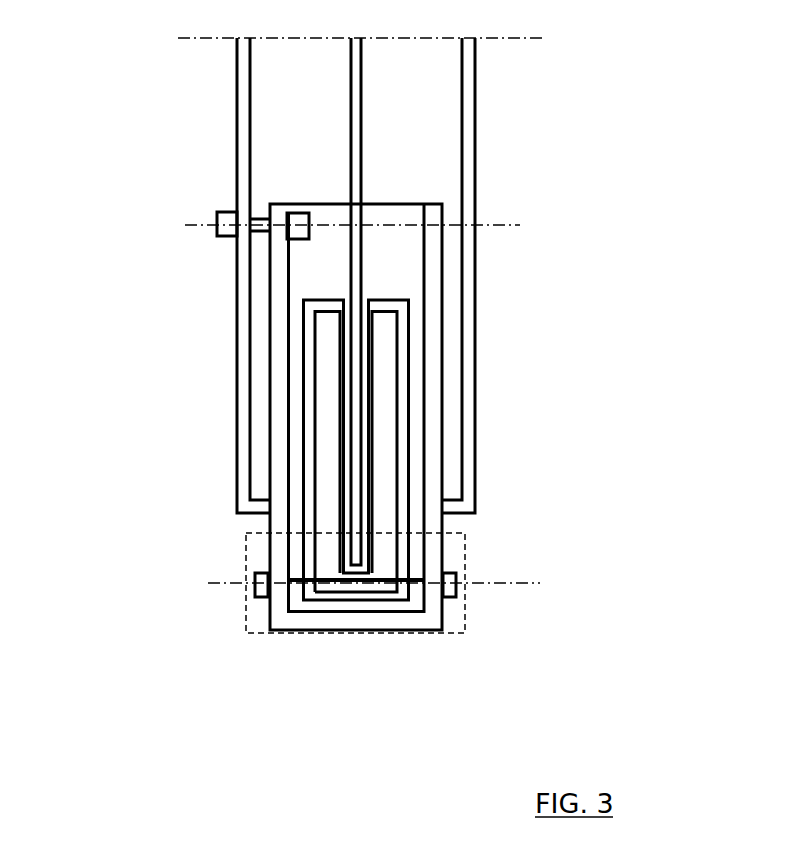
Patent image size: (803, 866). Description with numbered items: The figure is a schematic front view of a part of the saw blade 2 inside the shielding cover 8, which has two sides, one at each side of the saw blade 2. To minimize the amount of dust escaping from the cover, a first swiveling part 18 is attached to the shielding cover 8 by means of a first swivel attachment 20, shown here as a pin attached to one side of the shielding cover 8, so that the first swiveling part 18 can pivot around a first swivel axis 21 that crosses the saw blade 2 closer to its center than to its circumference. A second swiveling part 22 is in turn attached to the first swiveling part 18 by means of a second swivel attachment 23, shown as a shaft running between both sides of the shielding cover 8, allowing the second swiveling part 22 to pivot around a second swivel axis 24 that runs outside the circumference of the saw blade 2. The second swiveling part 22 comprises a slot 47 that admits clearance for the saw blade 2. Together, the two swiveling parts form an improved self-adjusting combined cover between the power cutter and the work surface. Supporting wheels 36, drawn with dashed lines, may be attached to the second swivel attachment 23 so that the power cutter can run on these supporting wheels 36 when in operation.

The saw blade 2 is at (352, 143).
The shielding cover 8 is at (465, 135).
The first swiveling part 18 is at (432, 323).
The first swivel attachment 20 is at (218, 232).
The first swivel axis 21 is at (488, 220).
The second swiveling part 22 is at (401, 460).
The second swivel attachment 23 is at (328, 578).
The second swivel axis 24 is at (520, 583).
The supporting wheels 36 is at (447, 633).
The slot 47 is at (365, 413).